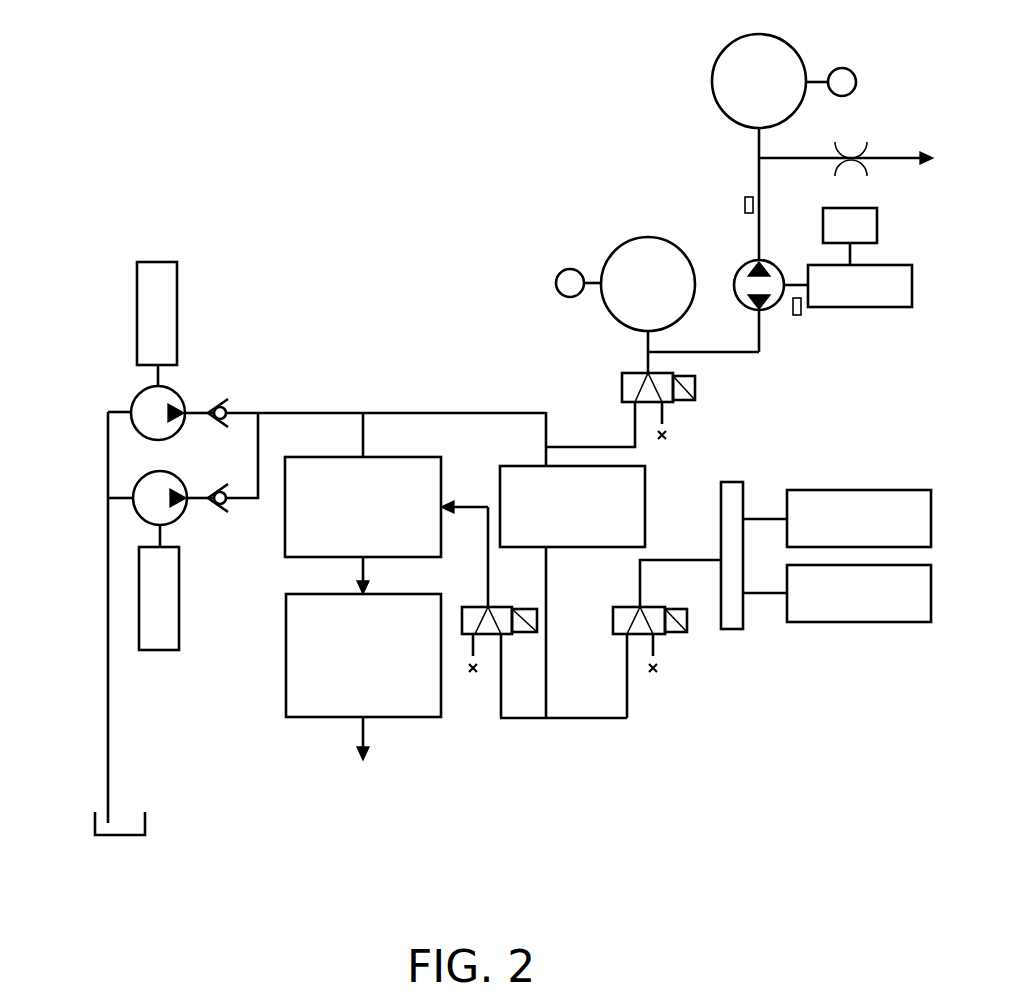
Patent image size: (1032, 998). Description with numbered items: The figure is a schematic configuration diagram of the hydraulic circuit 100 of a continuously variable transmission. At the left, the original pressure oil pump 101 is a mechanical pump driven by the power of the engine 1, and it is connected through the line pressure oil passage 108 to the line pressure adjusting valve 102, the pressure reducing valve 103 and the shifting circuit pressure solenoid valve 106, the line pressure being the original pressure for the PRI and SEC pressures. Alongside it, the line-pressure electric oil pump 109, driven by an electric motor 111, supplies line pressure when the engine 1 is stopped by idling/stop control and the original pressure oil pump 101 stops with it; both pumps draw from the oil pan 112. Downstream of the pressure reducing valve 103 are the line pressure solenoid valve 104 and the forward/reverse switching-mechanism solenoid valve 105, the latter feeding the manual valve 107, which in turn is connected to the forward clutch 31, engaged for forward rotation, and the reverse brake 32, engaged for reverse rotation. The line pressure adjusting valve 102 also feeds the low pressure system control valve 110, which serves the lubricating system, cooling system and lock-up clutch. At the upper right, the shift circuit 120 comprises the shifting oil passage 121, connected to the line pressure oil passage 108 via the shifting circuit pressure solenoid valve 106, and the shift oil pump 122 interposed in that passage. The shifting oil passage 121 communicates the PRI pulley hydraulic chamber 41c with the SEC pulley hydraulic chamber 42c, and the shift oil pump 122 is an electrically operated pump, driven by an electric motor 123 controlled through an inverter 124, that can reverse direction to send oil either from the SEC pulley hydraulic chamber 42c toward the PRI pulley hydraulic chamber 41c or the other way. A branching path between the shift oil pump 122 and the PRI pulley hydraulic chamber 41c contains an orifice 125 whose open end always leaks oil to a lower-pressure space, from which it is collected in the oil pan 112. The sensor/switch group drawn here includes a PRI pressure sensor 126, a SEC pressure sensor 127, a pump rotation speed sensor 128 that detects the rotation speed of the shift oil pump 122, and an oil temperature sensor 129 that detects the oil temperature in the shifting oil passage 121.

The engine 1 is at (177, 300).
The hydraulic circuit 100 is at (103, 643).
The original pressure oil pump 101 is at (138, 393).
The line pressure adjusting valve 102 is at (422, 457).
The pressure reducing valve 103 is at (646, 484).
The line pressure solenoid valve 104 is at (490, 605).
The forward/reverse switching-mechanism solenoid valve 105 is at (632, 602).
The shifting circuit pressure solenoid valve 106 is at (624, 370).
The manual valve 107 is at (730, 630).
The line pressure oil passage 108 is at (456, 411).
The line-pressure electric oil pump 109 is at (180, 518).
The low pressure system control valve 110 is at (285, 655).
The electric motor 111 is at (180, 585).
The oil pan 112 is at (147, 828).
The shift circuit 120 is at (596, 148).
The shifting oil passage 121 is at (727, 353).
The shift oil pump 122 is at (742, 266).
The electric motor 123 is at (850, 307).
The inverter 124 is at (877, 225).
The orifice 125 is at (852, 145).
The PRI pressure sensor 126 is at (850, 68).
The SEC pressure sensor 127 is at (562, 272).
The pump rotation speed sensor 128 is at (797, 315).
The oil temperature sensor 129 is at (745, 197).
The forward clutch 31 is at (865, 490).
The reverse brake 32 is at (862, 622).
The PRI pulley hydraulic chamber 41c is at (725, 50).
The SEC pulley hydraulic chamber 42c is at (614, 250).